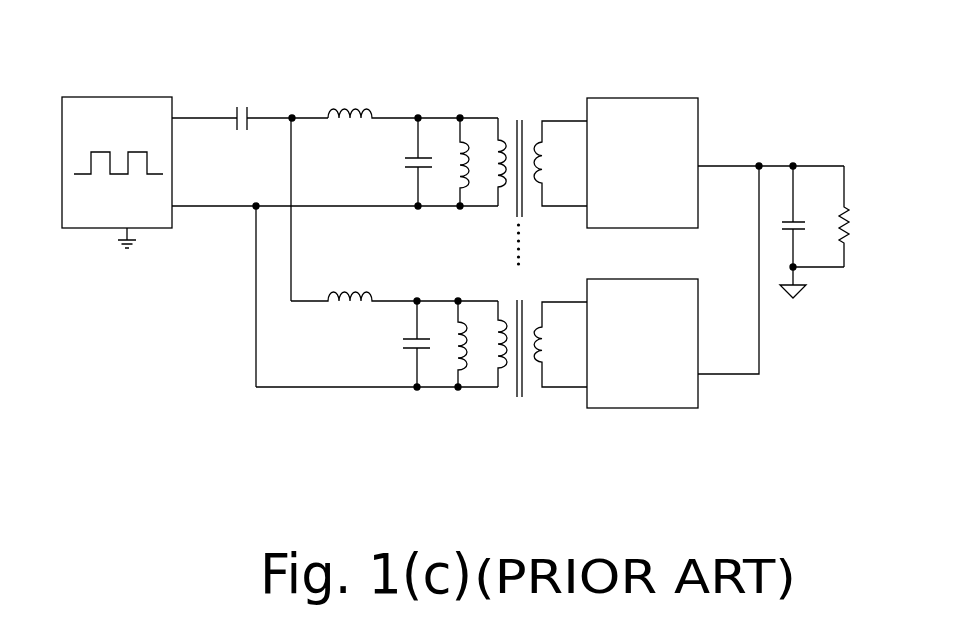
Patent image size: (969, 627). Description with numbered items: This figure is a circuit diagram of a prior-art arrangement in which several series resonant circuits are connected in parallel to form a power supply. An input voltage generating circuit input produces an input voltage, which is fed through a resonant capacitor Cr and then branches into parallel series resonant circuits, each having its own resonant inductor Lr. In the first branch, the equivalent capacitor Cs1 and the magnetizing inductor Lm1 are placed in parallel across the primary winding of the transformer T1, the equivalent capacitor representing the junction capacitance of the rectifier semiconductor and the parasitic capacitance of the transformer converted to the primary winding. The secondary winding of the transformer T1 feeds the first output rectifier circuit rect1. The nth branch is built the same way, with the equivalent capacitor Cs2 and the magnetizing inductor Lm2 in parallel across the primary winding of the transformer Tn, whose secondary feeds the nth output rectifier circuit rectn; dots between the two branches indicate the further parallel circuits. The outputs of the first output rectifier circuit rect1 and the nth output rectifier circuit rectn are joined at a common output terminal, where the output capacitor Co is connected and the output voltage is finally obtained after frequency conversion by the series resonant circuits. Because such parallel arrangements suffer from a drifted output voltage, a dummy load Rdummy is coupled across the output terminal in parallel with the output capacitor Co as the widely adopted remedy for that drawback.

The input voltage generating circuit input is at (93, 141).
The resonant capacitor Cr is at (240, 132).
The resonant inductor Lr is at (354, 221).
The equivalent capacitor Cs1 is at (418, 162).
The magnetizing inductor Lm1 is at (464, 162).
The transformer T1 is at (539, 169).
The equivalent capacitor Cs2 is at (416, 344).
The magnetizing inductor Lm2 is at (463, 344).
The transformer Tn is at (539, 351).
The output rectifier circuit rect1 is at (642, 163).
The output rectifier circuit rectn is at (642, 343).
The output capacitor Co is at (812, 232).
The dummy load Rdummy is at (873, 216).